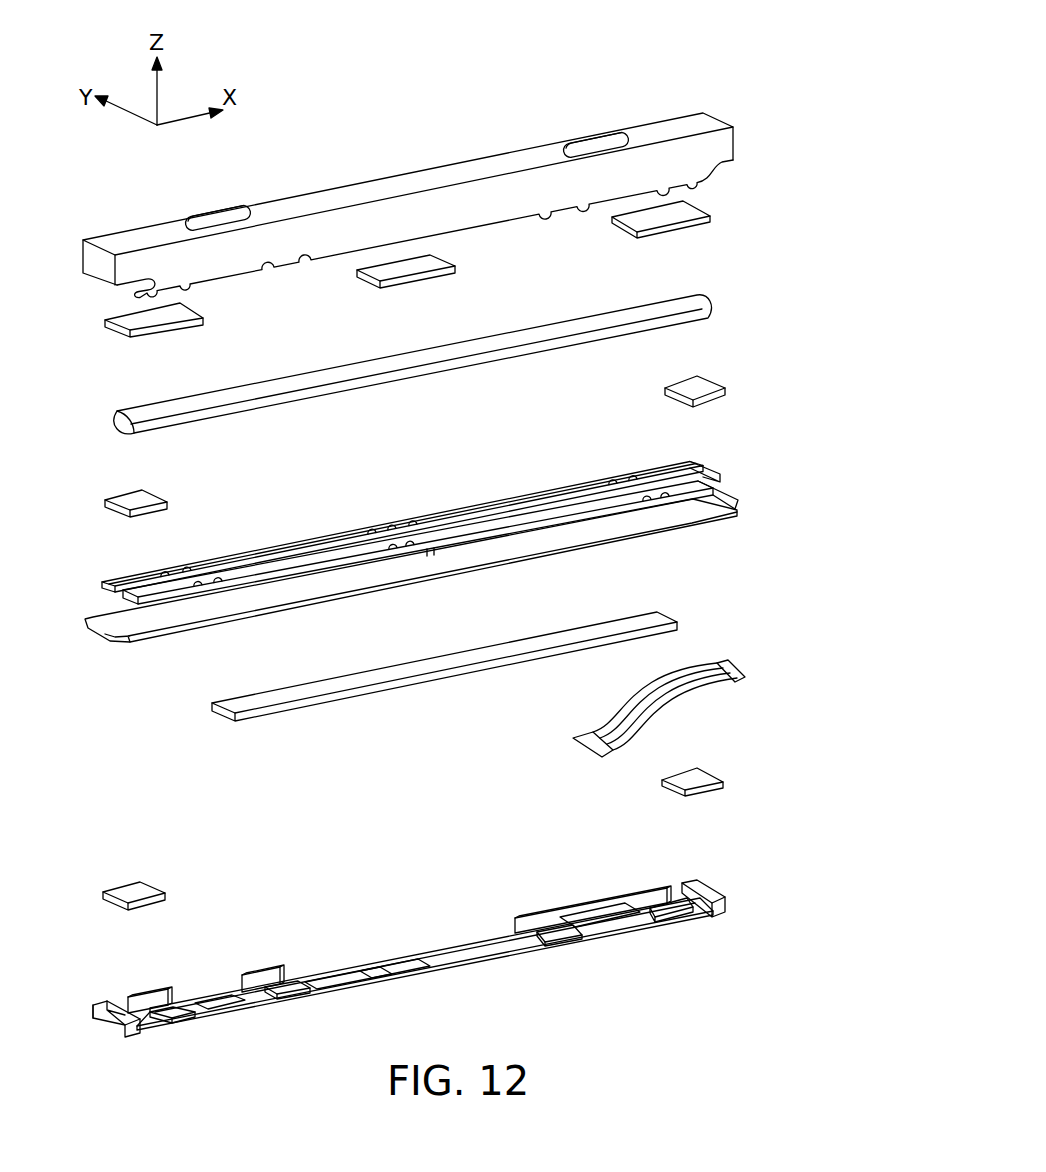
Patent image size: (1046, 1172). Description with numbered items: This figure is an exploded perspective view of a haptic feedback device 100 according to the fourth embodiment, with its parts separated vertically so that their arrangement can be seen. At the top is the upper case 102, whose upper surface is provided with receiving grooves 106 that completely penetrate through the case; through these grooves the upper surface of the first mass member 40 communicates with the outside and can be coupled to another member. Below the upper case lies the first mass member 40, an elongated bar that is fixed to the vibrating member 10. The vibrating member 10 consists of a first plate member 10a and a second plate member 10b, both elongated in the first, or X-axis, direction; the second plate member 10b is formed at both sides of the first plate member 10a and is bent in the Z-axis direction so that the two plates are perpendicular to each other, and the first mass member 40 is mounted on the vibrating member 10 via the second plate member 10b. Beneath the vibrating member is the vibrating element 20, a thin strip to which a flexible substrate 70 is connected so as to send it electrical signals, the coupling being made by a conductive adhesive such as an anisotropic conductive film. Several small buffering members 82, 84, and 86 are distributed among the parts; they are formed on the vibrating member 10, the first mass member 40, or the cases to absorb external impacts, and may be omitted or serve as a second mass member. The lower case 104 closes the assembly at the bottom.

The haptic feedback device 100 is at (700, 82).
The upper case 102 is at (725, 142).
The receiving grooves 106 is at (598, 147).
The buffering member 86 is at (693, 210).
The first mass member 40 is at (687, 307).
The buffering member 84 is at (712, 385).
The vibrating member 10 is at (717, 472).
The first plate member 10a is at (245, 600).
The second plate member 10b is at (297, 572).
The vibrating element 20 is at (660, 620).
The flexible substrate 70 is at (745, 677).
The buffering member 82 is at (703, 774).
The lower case 104 is at (708, 886).